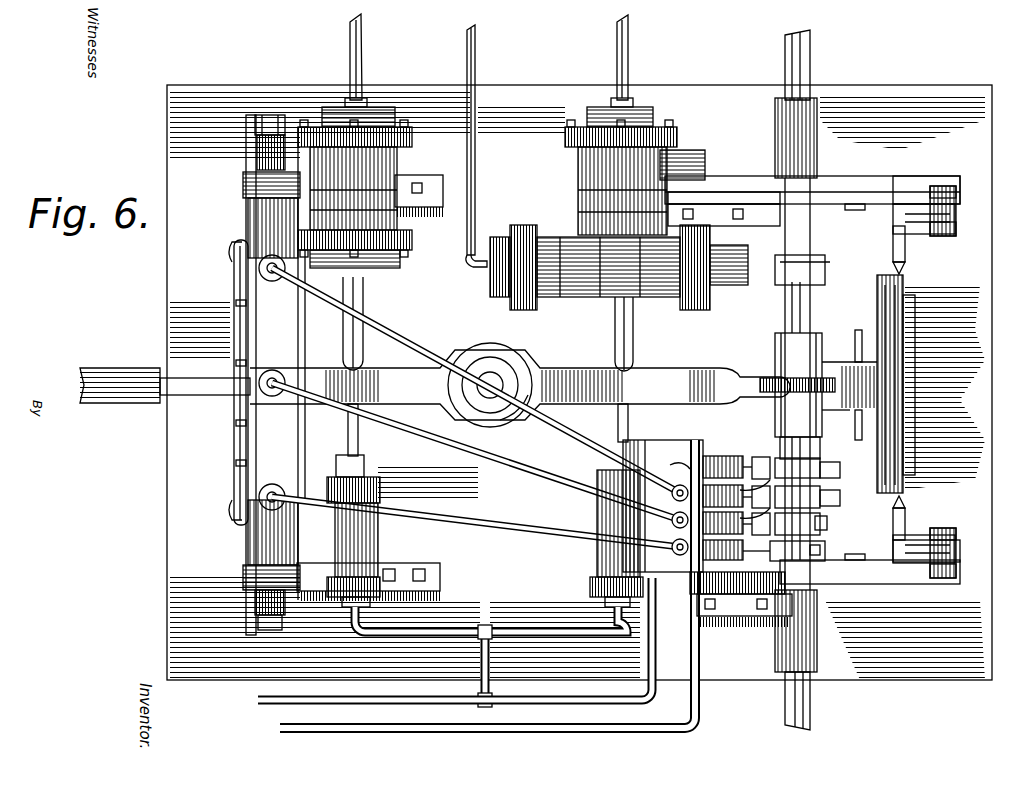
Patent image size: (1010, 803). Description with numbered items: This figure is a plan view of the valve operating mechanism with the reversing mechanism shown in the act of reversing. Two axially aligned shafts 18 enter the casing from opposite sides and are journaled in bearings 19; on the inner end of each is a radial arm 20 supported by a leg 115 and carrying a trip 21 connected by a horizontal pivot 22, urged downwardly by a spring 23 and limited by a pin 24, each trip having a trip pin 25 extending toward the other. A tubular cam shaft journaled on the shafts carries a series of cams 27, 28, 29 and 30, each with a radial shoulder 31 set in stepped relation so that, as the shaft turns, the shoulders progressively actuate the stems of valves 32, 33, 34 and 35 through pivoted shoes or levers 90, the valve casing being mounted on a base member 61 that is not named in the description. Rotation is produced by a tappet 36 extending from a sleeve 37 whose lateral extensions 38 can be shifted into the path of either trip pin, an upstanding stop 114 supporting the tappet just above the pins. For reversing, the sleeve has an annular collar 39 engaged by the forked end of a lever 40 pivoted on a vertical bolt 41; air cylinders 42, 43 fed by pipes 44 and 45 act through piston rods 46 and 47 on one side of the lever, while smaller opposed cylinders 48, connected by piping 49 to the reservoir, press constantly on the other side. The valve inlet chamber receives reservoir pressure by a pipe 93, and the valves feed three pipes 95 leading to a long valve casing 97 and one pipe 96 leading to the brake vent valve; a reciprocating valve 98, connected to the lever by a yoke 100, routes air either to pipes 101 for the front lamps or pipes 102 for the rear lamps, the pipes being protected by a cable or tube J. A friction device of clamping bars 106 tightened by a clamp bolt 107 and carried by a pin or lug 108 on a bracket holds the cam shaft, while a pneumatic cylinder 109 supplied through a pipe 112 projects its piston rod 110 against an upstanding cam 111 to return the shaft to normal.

The cable or tube J is at (165, 396).
The shaft 18 is at (812, 65).
The bearing 19 is at (688, 198).
The radial arm 20 is at (848, 200).
The trip 21 is at (925, 585).
The horizontal pivot 22 is at (944, 238).
The spring 23 is at (947, 220).
The pin 24 is at (900, 202).
The trip pin 25 is at (893, 243).
The cam 27 is at (823, 553).
The cam 28 is at (827, 527).
The cam 29 is at (813, 492).
The cam 30 is at (841, 444).
The radial shoulder 31 is at (797, 462).
The valve 32 is at (748, 552).
The valve 33 is at (692, 538).
The valve 34 is at (687, 482).
The valve 35 is at (748, 460).
The tappet 36 is at (868, 384).
The sleeve 37 is at (780, 347).
The lateral extension 38 is at (900, 328).
The annular collar 39 is at (775, 381).
The lever 40 is at (690, 368).
The vertical bolt 41 is at (492, 370).
The air cylinder 42 is at (397, 167).
The air cylinder 43 is at (590, 168).
The pipe 44 is at (361, 62).
The pipe 45 is at (628, 60).
The piston rod 46 is at (365, 305).
The piston rod 47 is at (633, 322).
The cylinder 48 is at (340, 546).
The piping 49 is at (435, 625).
The plate 61 is at (744, 607).
The shoe or lever 90 is at (763, 510).
The pipe 93 is at (545, 694).
The pipe 95 is at (552, 426).
The pipe 96 is at (556, 735).
The valve casing 97 is at (275, 382).
The valve 98 is at (267, 160).
The yoke 100 is at (241, 132).
The pipe 101 is at (238, 300).
The pipe 102 is at (240, 276).
The clamping bar 106 is at (762, 218).
The clamp bolt 107 is at (735, 208).
The pin or lug 108 is at (685, 192).
The pneumatic cylinder 109 is at (582, 296).
The piston rod 110 is at (746, 282).
The upstanding cam 111 is at (818, 268).
The pipe 112 is at (490, 153).
The upstanding stop 114 is at (857, 329).
The leg 115 is at (856, 206).